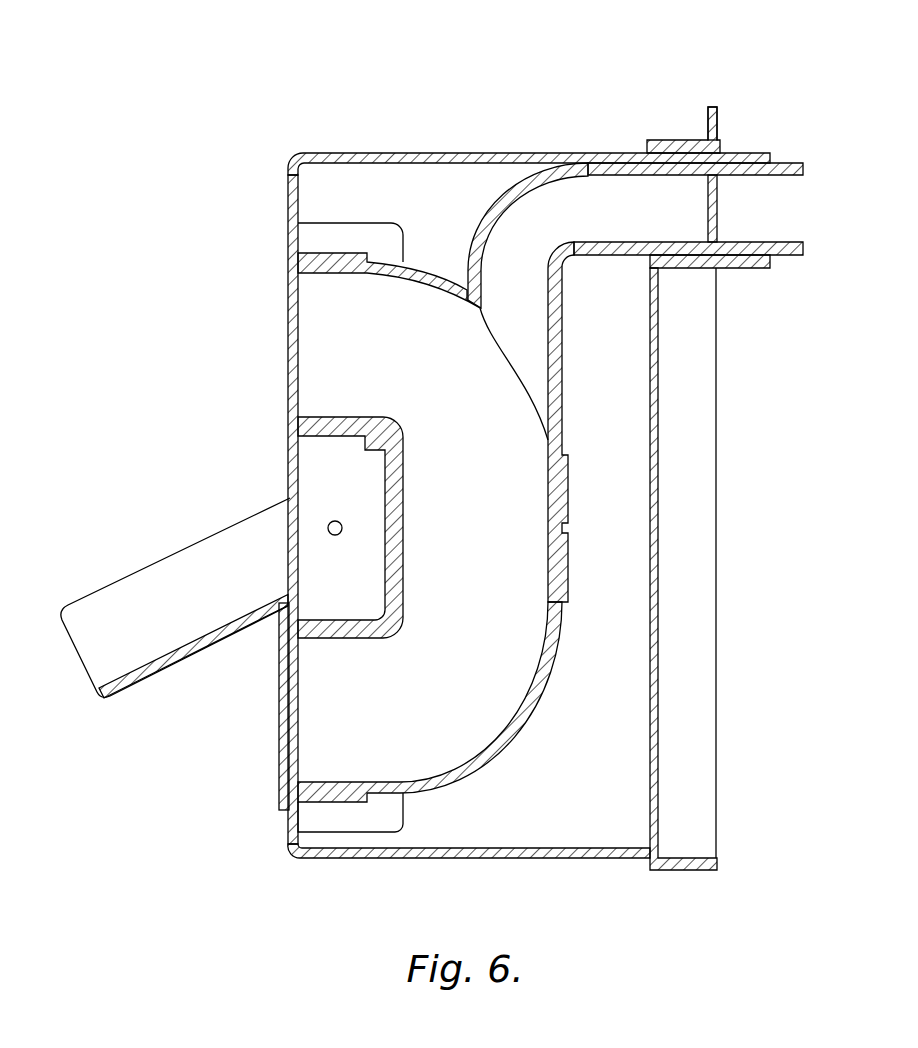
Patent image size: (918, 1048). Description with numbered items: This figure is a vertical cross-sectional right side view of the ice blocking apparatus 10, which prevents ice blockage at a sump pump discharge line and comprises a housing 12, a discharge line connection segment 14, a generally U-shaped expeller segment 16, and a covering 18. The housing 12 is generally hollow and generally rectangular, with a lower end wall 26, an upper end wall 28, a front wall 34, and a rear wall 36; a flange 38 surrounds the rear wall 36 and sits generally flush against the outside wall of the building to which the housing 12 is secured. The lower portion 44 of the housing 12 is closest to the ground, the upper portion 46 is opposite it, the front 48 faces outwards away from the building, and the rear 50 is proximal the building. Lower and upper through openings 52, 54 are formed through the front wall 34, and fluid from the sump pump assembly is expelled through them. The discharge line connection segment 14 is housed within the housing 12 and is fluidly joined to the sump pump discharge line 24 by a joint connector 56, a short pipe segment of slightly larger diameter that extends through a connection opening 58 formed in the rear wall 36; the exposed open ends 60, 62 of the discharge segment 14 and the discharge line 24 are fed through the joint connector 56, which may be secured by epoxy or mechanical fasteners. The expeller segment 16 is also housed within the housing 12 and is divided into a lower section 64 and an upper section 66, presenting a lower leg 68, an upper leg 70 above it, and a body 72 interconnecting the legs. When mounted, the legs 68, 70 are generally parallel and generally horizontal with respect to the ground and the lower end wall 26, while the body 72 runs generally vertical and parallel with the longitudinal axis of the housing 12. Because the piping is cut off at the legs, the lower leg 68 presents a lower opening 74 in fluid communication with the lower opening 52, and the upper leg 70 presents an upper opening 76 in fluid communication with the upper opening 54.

The ice blocking apparatus 10 is at (265, 62).
The housing 12 is at (389, 118).
The discharge line connection segment 14 is at (587, 198).
The expeller segment 16 is at (462, 342).
The covering 18 is at (266, 672).
The sump pump discharge line 24 is at (778, 236).
The lower end wall 26 is at (565, 860).
The upper end wall 28 is at (338, 152).
The front wall 34 is at (290, 480).
The rear wall 36 is at (660, 600).
The flange 38 is at (719, 112).
The lower portion 44 is at (276, 834).
The upper portion 46 is at (272, 195).
The front 48 is at (202, 398).
The rear 50 is at (732, 528).
The lower through opening 52 is at (298, 772).
The upper through opening 54 is at (290, 356).
The joint connector 56 is at (745, 160).
The connection opening 58 is at (645, 156).
The end of discharge segment 60 is at (708, 205).
The end of discharge line 62 is at (722, 198).
The lower section 64 is at (528, 740).
The upper section 66 is at (418, 252).
The lower leg 68 is at (445, 785).
The upper leg 70 is at (448, 283).
The body 72 is at (555, 498).
The lower opening 74 is at (295, 712).
The upper opening 76 is at (300, 332).